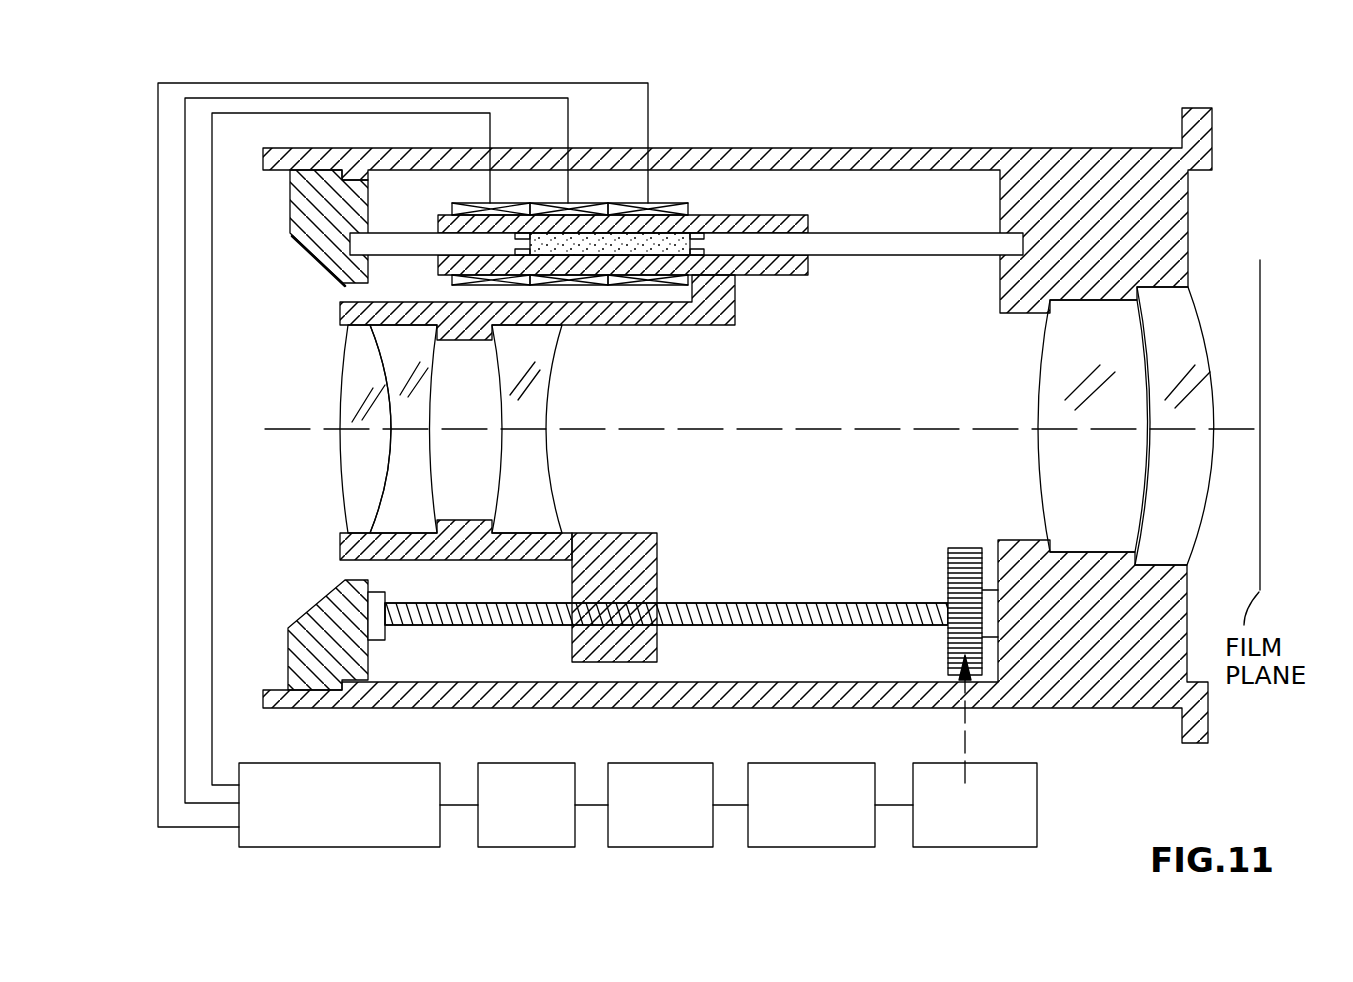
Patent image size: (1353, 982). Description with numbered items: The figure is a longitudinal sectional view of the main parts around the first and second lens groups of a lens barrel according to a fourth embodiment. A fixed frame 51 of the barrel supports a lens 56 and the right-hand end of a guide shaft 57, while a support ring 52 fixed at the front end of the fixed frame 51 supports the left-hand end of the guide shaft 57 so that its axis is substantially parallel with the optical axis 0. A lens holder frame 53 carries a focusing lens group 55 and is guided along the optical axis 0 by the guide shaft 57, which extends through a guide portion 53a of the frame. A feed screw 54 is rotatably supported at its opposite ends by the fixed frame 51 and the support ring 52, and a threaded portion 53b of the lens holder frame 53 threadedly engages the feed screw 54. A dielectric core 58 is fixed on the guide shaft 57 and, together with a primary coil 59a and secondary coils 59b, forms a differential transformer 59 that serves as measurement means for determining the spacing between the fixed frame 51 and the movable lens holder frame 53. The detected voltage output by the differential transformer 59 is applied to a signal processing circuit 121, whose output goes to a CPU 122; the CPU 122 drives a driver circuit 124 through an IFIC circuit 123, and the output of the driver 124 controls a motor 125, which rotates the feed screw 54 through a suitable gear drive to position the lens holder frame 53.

The optical axis 0 is at (296, 425).
The fixed frame 51 is at (878, 148).
The support ring 52 is at (302, 212).
The lens holder frame 53 is at (735, 299).
The guide portion 53a is at (798, 217).
The threaded portion 53b is at (657, 580).
The feed screw 54 is at (880, 600).
The focusing lens group 55 is at (530, 440).
The lens 56 is at (1200, 463).
The guide shaft 57 is at (396, 247).
The dielectric core 58 is at (700, 212).
The differential transformer 59 is at (584, 151).
The primary coil 59a is at (590, 203).
The secondary coils 59b is at (510, 203).
The signal processing circuit 121 is at (311, 763).
The CPU 122 is at (492, 763).
The IFIC circuit 123 is at (628, 763).
The driver circuit 124 is at (765, 763).
The motor 125 is at (940, 763).